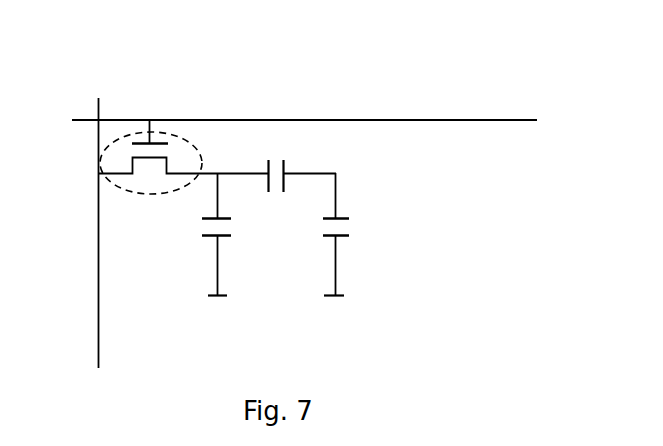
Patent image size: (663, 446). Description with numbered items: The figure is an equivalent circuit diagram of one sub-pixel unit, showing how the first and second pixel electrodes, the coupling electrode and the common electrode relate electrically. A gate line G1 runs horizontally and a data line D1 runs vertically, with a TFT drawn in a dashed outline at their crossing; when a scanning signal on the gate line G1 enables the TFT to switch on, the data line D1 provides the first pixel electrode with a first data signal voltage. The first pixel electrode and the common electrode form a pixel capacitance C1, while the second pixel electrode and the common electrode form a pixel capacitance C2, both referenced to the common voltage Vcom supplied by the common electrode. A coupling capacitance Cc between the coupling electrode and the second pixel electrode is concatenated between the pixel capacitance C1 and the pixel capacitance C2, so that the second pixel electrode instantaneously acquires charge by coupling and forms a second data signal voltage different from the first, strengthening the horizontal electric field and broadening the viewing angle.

The data line D1 is at (97, 217).
The gate line G1 is at (286, 126).
The thin film transistor TFT is at (174, 136).
The coupling capacitance Cc is at (299, 165).
The pixel capacitance C1 is at (192, 234).
The pixel capacitance C2 is at (360, 234).
The common voltage Vcom is at (292, 317).